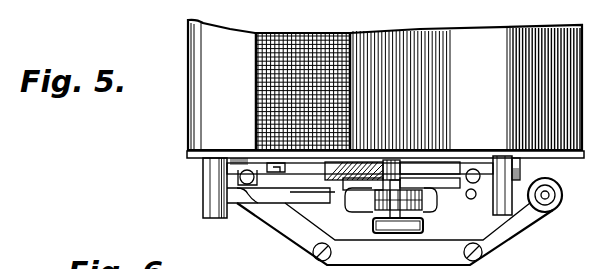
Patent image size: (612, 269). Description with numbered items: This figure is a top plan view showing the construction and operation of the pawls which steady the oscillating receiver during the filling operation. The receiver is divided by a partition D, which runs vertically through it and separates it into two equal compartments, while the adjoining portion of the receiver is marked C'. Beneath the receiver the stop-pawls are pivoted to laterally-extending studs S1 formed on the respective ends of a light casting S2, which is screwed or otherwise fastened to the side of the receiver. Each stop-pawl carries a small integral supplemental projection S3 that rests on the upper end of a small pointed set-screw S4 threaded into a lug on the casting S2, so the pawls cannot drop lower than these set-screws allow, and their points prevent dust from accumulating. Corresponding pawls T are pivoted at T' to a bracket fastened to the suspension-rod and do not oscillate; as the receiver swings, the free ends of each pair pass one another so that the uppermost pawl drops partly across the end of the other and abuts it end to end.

The partition D is at (303, 91).
The cylinder section C' is at (466, 89).
The laterally-extending studs S1 is at (356, 193).
The light casting S2 is at (325, 170).
The supplemental projection S3 is at (360, 174).
The pointed set-screw S4 is at (352, 187).
The pawls T is at (393, 216).
The pivots T' is at (392, 211).